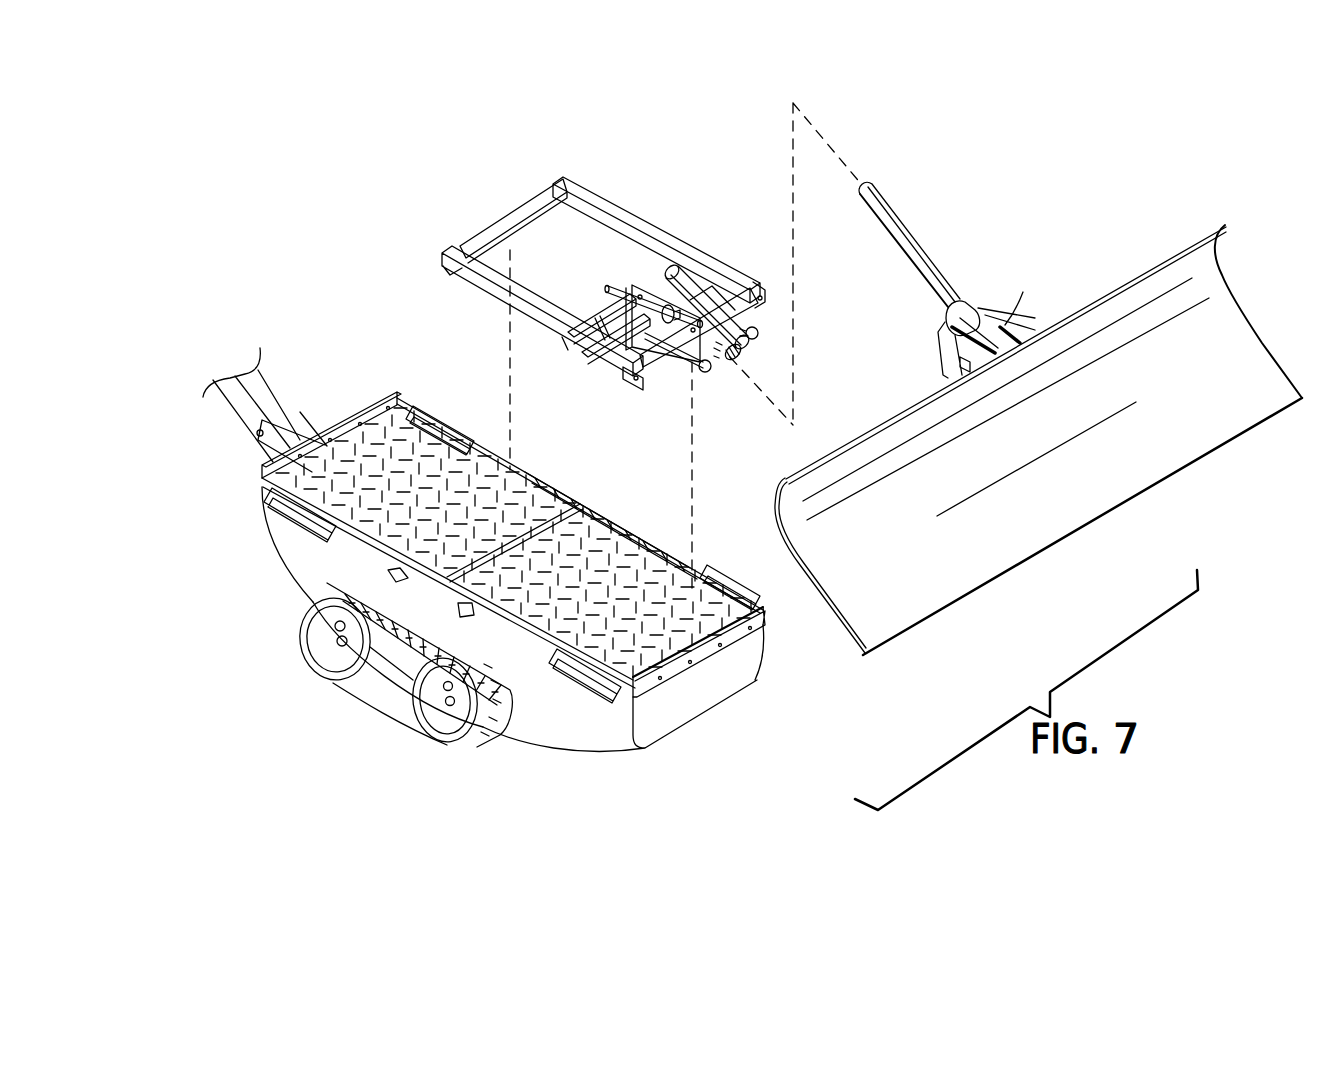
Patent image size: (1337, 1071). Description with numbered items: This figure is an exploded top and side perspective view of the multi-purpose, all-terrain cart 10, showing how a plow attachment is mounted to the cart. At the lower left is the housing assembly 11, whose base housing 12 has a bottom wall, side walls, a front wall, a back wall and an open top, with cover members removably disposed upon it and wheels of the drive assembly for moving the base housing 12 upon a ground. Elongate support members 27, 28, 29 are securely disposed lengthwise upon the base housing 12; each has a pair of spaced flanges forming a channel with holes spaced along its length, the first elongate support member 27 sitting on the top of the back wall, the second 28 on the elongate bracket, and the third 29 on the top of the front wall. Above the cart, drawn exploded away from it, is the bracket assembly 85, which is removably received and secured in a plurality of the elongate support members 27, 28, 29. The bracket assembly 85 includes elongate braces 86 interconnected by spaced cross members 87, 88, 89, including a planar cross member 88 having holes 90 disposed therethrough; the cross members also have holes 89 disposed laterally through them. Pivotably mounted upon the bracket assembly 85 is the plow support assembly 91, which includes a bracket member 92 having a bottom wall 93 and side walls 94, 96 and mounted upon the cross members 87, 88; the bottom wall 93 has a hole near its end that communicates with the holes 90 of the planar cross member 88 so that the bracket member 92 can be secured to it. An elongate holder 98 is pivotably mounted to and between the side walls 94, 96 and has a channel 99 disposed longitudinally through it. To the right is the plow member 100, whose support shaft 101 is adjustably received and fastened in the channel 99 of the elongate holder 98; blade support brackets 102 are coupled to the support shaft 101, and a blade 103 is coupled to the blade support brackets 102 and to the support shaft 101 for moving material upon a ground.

The plow attachment 10 is at (1038, 365).
The housing assembly 11 is at (607, 770).
The base housing 12 is at (290, 555).
The elongate support member 27 is at (365, 405).
The elongate support member 28 is at (572, 490).
The elongate support member 29 is at (755, 680).
The bracket assembly 85 is at (620, 294).
The elongate braces 86 is at (605, 205).
The cross member 87 is at (508, 225).
The planar cross member 88 is at (600, 345).
The cross member 89 is at (770, 298).
The holes 90 is at (684, 319).
The plow support assembly 91 is at (703, 382).
The bracket member 92 is at (670, 265).
The bottom wall 93 is at (610, 300).
The side wall 94 is at (640, 290).
The side wall 96 is at (725, 290).
The elongate holder 98 is at (745, 325).
The channel 99 is at (710, 357).
The plow member 100 is at (955, 305).
The support shaft 101 is at (918, 250).
The blade support brackets 102 is at (1000, 332).
The blade 103 is at (1245, 332).